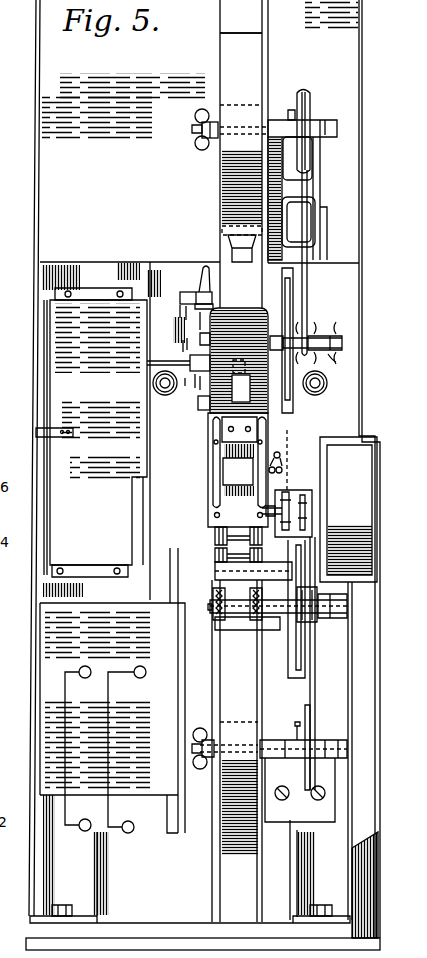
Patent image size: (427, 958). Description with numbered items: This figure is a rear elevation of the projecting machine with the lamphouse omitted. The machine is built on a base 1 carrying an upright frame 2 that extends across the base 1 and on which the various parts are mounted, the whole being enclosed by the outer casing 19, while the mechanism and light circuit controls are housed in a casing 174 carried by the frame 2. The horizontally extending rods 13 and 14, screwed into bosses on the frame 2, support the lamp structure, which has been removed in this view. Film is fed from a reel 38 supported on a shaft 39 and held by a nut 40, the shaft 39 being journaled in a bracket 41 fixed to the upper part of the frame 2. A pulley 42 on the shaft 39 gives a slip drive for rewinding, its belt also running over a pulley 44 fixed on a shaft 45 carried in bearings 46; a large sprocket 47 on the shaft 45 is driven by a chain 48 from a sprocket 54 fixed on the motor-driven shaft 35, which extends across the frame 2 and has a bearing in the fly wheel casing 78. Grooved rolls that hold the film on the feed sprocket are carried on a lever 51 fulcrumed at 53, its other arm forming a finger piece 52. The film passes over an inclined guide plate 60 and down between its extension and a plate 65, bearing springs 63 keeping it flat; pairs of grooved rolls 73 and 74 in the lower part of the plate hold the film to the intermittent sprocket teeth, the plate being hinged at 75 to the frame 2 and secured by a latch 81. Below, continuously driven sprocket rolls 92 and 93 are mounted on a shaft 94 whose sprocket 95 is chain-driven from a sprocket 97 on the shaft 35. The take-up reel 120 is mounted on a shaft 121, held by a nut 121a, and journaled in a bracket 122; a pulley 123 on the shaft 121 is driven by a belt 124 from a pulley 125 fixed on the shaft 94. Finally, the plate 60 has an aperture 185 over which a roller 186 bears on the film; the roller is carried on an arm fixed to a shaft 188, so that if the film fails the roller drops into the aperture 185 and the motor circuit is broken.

The base 1 is at (128, 933).
The upright frame 2 is at (57, 888).
The horizontally extending rod 13 is at (153, 381).
The horizontally extending rod 14 is at (328, 383).
The outer casing 19 is at (37, 233).
The shaft 35 is at (262, 512).
The reel 38 is at (218, 68).
The shaft 39 is at (192, 128).
The nut 40 is at (202, 145).
The bracket 41 is at (328, 182).
The pulley 42 is at (312, 108).
The pulley 44 is at (305, 327).
The shaft 45 is at (342, 338).
The bearings 46 is at (270, 330).
The large sprocket 47 is at (290, 393).
The chain 48 is at (299, 460).
The lever 51 is at (212, 313).
The finger piece 52 is at (202, 273).
The fulcrum 53 is at (182, 297).
The sprocket 54 is at (293, 500).
The apron or inclined guide plate 60 is at (210, 343).
The bearing springs 63 is at (263, 443).
The plate 65 is at (230, 487).
The grooved rolls 73 is at (213, 533).
The grooved rolls 74 is at (215, 557).
The hinge 75 is at (217, 572).
The fly wheel casing 78 is at (362, 480).
The latch 81 is at (280, 458).
The sprocket roll 92 is at (215, 592).
The sprocket roll 93 is at (258, 590).
The shaft 94 is at (214, 610).
The sprocket 95 is at (302, 662).
The sprocket 97 is at (305, 502).
The reel 120 is at (212, 888).
The shaft 121 is at (270, 738).
The nut 121a is at (200, 767).
The bracket 122 is at (317, 813).
The pulley 123 is at (312, 715).
The belt 124 is at (313, 688).
The pulley 125 is at (317, 628).
The casing 174 is at (67, 390).
The aperture 185 is at (238, 393).
The roller 186 is at (200, 392).
The shaft 188 is at (160, 360).